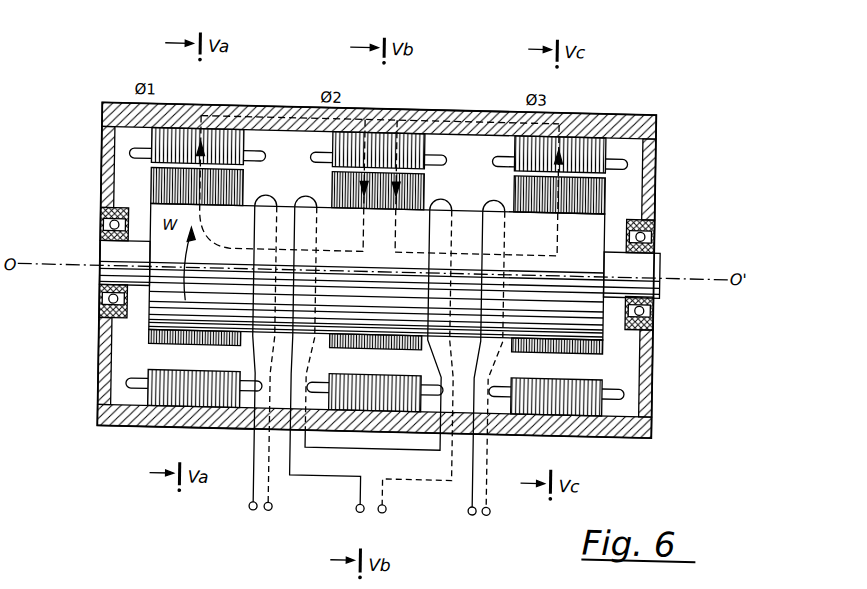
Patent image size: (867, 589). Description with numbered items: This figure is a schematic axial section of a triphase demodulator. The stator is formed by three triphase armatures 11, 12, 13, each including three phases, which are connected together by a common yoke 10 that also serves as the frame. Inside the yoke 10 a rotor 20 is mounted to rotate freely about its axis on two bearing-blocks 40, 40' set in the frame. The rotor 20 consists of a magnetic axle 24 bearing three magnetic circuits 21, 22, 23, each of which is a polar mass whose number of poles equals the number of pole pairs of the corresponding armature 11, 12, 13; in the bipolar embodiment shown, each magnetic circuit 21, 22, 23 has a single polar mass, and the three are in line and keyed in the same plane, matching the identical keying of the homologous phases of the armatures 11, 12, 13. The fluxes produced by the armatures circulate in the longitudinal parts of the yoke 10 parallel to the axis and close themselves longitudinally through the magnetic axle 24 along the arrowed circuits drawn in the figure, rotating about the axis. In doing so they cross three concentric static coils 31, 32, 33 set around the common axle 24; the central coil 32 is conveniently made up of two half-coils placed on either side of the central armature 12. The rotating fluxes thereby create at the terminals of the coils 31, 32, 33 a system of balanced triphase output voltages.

The common yoke 10 is at (271, 106).
The triphase armature 11 is at (138, 135).
The triphase armature 12 is at (428, 142).
The triphase armature 13 is at (618, 139).
The rotor 20 is at (611, 336).
The magnetic circuit 21 is at (162, 191).
The magnetic circuit 22 is at (417, 187).
The magnetic circuit 23 is at (591, 188).
The magnetic axle 24 is at (168, 304).
The static coil 31 is at (258, 479).
The central static coil 32 is at (331, 473).
The static coil 33 is at (476, 479).
The bearing-block 40 is at (79, 262).
The bearing-block 40' is at (673, 270).